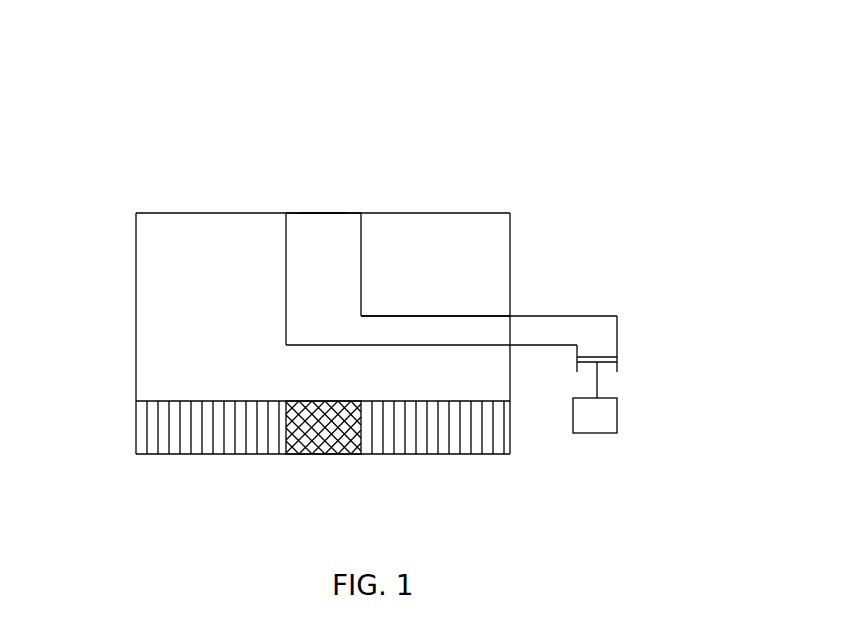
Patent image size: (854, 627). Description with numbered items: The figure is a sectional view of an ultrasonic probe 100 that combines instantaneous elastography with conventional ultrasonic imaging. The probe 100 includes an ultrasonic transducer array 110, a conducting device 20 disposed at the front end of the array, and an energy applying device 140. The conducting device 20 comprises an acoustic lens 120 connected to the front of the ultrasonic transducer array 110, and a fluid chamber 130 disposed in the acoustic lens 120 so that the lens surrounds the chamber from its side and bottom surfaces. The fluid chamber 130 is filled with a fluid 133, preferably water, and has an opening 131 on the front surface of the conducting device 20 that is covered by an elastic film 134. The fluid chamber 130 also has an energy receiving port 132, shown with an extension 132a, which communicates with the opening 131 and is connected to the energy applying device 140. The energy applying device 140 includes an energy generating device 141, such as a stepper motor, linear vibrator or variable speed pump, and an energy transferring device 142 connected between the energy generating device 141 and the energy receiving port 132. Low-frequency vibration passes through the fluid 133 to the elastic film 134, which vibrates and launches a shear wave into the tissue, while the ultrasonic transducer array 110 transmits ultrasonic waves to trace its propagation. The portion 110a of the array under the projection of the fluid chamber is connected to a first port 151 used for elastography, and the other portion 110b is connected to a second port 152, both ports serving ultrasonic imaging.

The ultrasonic probe 100 is at (154, 48).
The conducting device 20 is at (324, 333).
The ultrasonic transducer array 110 is at (277, 458).
The portion of the ultrasonic transducer array 110a is at (323, 458).
The other portion of the ultrasonic transducer array 110b is at (325, 458).
The acoustic lens 120 is at (498, 262).
The fluid chamber 130 is at (361, 258).
The opening 131 is at (333, 208).
The energy receiving port 132 is at (372, 324).
The extension 132a is at (489, 355).
The fluid 133 is at (338, 309).
The elastic film 134 is at (307, 212).
The energy applying device 140 is at (650, 348).
The energy generating device 141 is at (615, 415).
The energy transferring device 142 is at (605, 355).
The first port 151 is at (323, 458).
The second port 152 is at (435, 454).